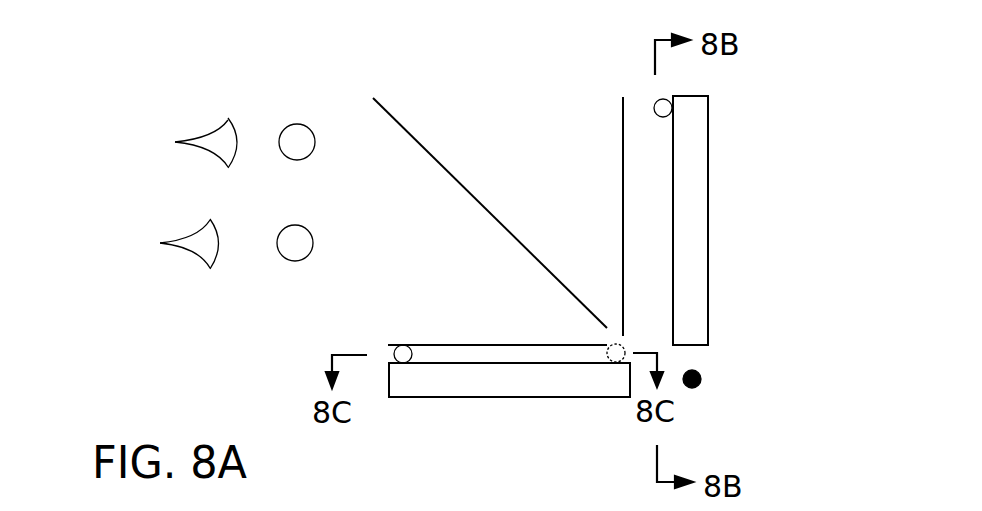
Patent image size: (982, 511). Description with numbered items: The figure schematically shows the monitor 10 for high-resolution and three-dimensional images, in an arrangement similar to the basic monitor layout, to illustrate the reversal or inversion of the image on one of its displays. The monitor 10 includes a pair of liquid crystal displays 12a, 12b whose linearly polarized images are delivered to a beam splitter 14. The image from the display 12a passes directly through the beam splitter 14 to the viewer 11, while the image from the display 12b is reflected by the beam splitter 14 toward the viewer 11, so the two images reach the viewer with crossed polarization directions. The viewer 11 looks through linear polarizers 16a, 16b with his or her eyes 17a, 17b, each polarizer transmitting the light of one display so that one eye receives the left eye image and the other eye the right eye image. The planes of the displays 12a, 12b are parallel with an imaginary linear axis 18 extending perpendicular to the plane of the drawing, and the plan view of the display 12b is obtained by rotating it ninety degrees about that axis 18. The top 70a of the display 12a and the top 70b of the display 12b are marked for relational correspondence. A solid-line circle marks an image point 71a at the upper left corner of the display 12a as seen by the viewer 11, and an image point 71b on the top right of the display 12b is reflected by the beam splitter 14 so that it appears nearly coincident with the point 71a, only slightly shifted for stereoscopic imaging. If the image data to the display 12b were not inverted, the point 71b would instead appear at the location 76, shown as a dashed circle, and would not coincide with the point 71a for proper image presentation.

The monitor 10 is at (516, 62).
The viewer 11 is at (357, 58).
The liquid crystal display 12a is at (708, 208).
The liquid crystal display 12b is at (443, 388).
The beam splitter 14 is at (498, 222).
The linear polarizer 16a is at (296, 124).
The linear polarizer 16b is at (293, 261).
The eye 17a is at (205, 138).
The eye 17b is at (190, 248).
The linear axis 18 is at (700, 380).
The top of the display 12a 70a is at (695, 143).
The top of the display 12b 70b is at (550, 390).
The image point 71a is at (654, 106).
The image point 71b is at (400, 363).
The location 76 is at (607, 350).